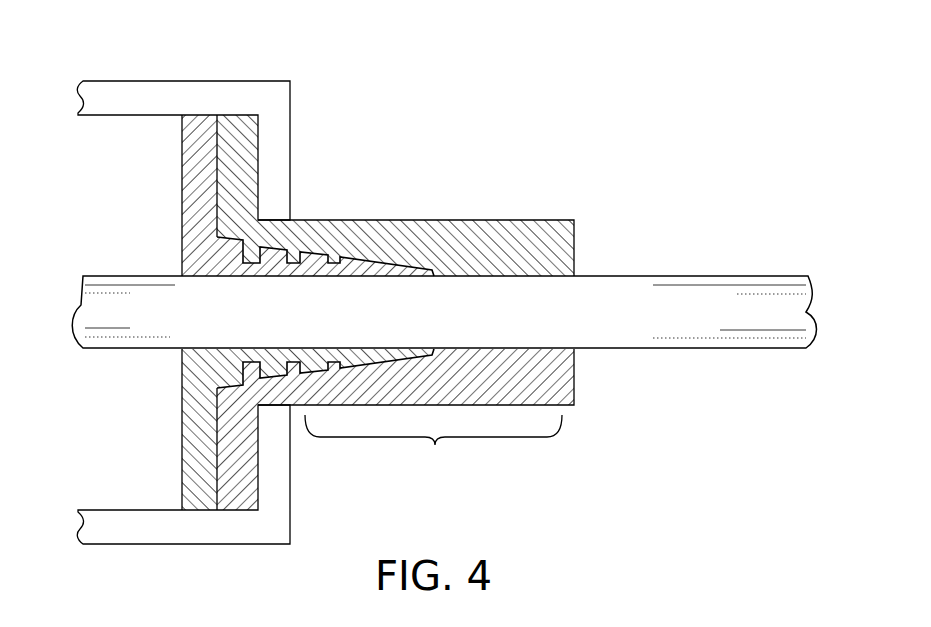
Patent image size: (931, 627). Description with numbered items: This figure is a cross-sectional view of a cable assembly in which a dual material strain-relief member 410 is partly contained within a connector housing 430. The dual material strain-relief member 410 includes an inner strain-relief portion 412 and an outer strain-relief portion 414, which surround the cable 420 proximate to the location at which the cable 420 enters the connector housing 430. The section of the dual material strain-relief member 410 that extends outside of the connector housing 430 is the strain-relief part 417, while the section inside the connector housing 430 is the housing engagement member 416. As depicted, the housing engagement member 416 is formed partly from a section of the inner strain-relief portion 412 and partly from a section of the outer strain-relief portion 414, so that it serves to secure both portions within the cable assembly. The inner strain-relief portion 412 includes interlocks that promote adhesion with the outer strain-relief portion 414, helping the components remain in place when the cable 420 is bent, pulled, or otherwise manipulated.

The dual material strain-relief member 410 is at (330, 297).
The inner strain-relief portion 412 is at (317, 250).
The outer strain-relief portion 414 is at (420, 220).
The housing engagement member 416 is at (177, 222).
The strain-relief part 417 is at (433, 447).
The cable 420 is at (650, 276).
The connector housing 430 is at (227, 81).